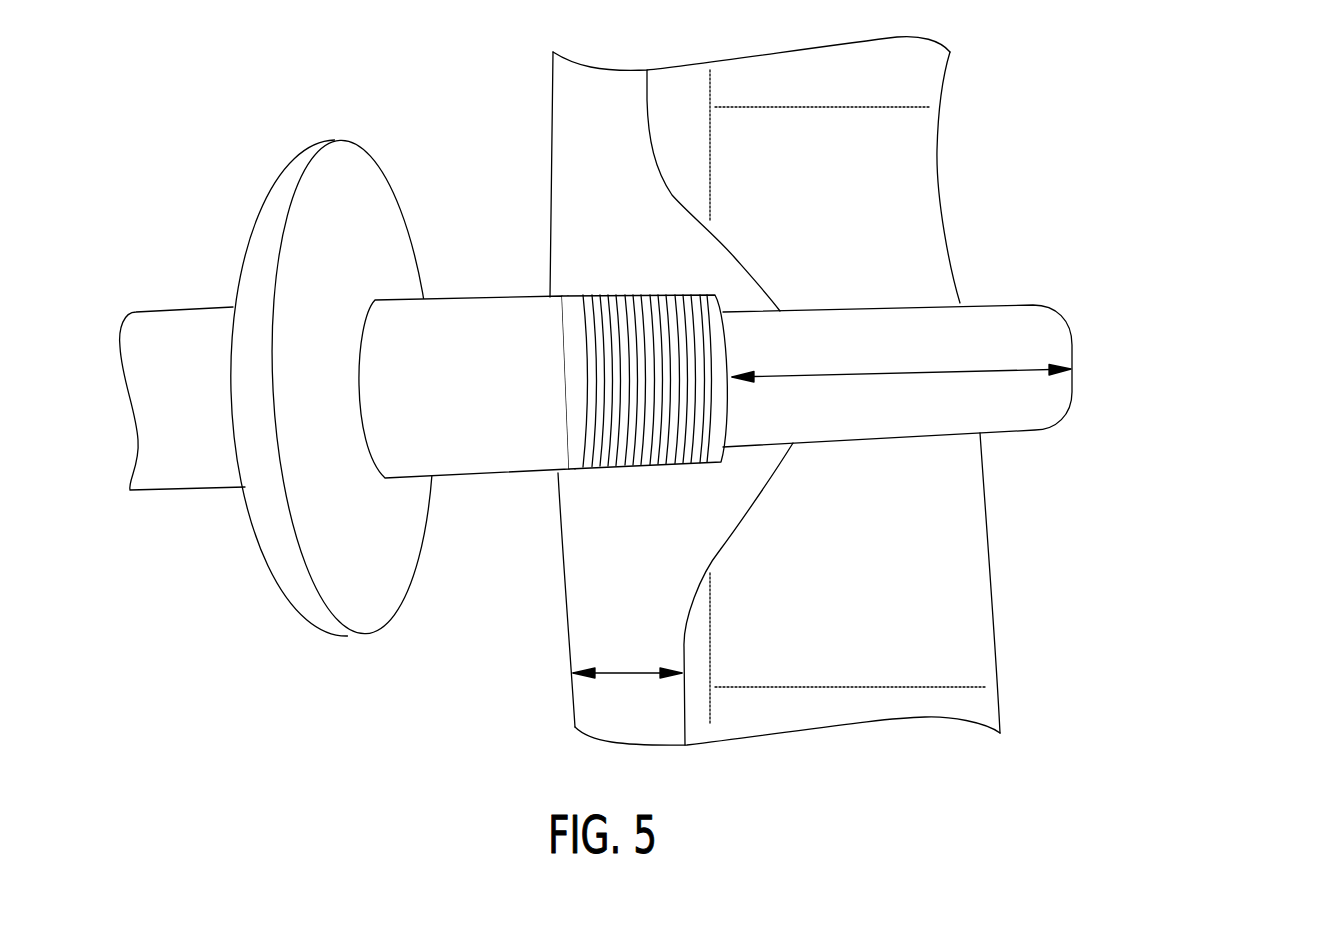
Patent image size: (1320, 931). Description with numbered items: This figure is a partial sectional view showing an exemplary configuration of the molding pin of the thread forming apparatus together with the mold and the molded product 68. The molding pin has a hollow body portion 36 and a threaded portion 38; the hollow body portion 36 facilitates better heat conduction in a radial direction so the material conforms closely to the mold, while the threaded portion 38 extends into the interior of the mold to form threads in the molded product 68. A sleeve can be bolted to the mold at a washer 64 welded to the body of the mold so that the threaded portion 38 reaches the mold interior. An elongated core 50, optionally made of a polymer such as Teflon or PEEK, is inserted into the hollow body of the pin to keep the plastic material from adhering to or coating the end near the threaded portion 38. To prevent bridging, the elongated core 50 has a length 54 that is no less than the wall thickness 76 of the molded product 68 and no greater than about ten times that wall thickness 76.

The hollow body portion 36 is at (497, 478).
The threaded portion 38 is at (652, 293).
The elongated core 50 is at (992, 302).
The length 54 is at (958, 375).
The washer 64 is at (373, 198).
The molded product 68 is at (602, 87).
The wall thickness 76 is at (628, 670).